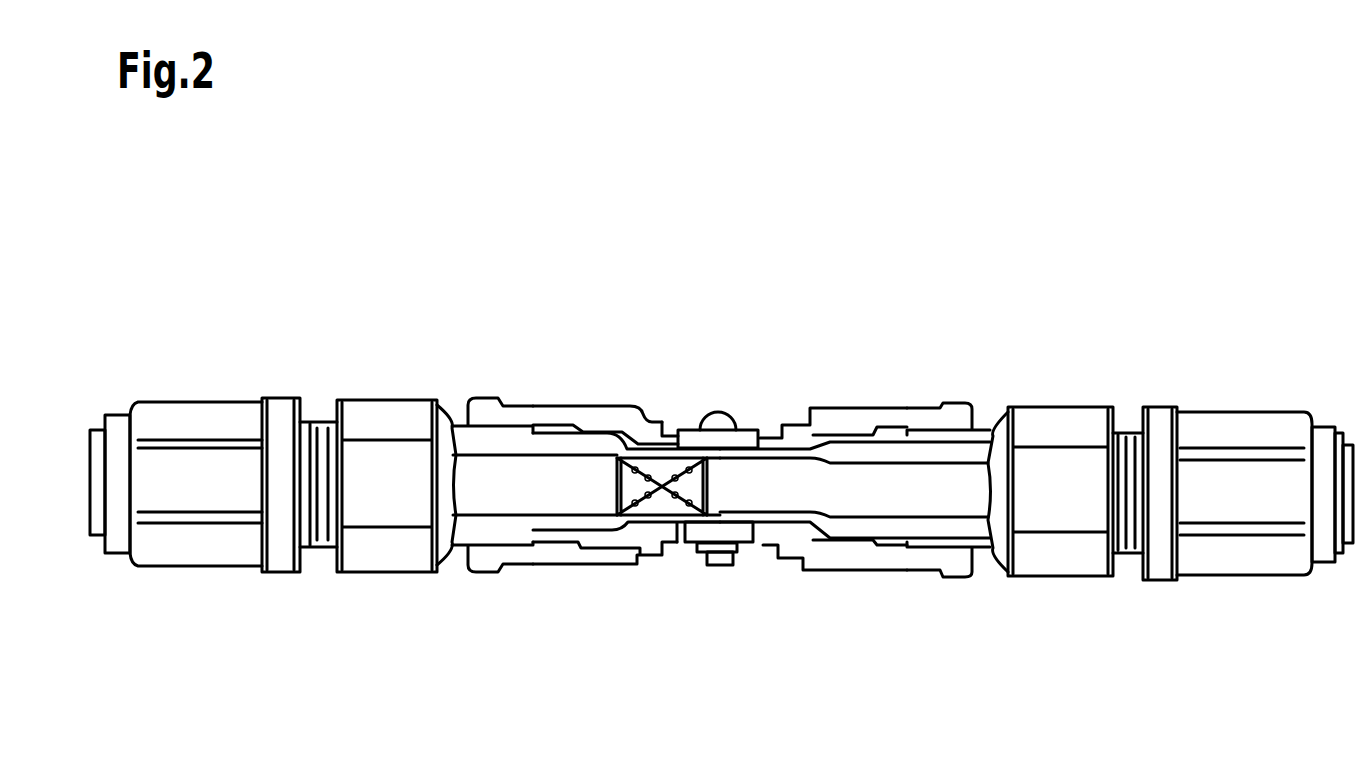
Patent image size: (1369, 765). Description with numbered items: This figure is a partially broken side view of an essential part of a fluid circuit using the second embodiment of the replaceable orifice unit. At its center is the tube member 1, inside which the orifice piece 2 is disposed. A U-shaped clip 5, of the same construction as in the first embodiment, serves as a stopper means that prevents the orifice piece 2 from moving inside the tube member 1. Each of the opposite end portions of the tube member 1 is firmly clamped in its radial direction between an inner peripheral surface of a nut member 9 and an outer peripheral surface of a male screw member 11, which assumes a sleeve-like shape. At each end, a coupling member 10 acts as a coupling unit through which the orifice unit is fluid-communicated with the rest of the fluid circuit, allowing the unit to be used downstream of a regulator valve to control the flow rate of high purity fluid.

The tube member 1 is at (743, 522).
The orifice piece 2 is at (683, 540).
The U-shaped clip 5 is at (747, 433).
The nut member 9 is at (590, 555).
The coupling member 10 is at (308, 378).
The male screw member 11 is at (500, 530).